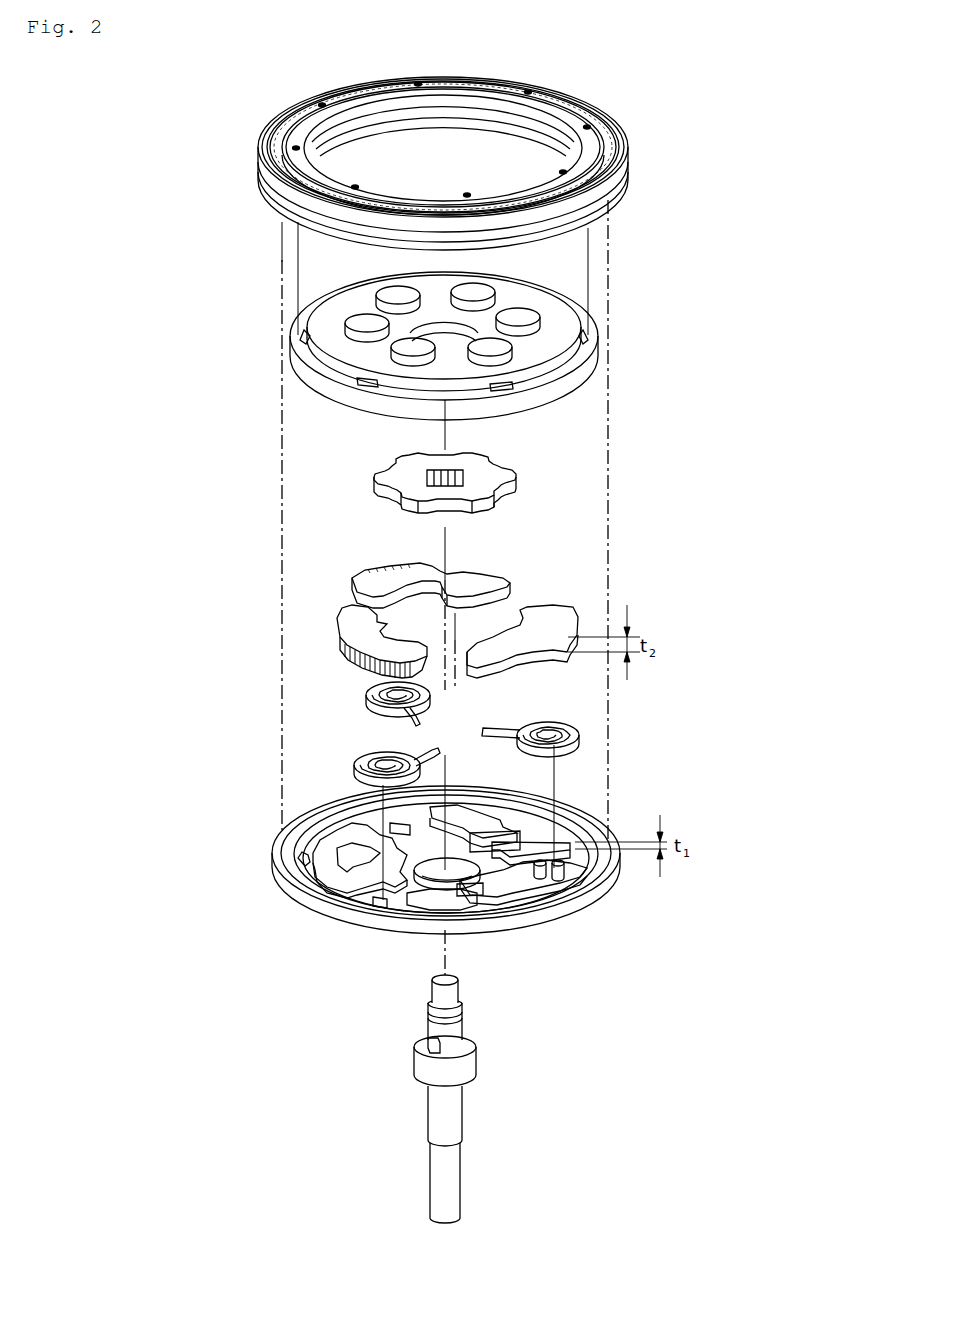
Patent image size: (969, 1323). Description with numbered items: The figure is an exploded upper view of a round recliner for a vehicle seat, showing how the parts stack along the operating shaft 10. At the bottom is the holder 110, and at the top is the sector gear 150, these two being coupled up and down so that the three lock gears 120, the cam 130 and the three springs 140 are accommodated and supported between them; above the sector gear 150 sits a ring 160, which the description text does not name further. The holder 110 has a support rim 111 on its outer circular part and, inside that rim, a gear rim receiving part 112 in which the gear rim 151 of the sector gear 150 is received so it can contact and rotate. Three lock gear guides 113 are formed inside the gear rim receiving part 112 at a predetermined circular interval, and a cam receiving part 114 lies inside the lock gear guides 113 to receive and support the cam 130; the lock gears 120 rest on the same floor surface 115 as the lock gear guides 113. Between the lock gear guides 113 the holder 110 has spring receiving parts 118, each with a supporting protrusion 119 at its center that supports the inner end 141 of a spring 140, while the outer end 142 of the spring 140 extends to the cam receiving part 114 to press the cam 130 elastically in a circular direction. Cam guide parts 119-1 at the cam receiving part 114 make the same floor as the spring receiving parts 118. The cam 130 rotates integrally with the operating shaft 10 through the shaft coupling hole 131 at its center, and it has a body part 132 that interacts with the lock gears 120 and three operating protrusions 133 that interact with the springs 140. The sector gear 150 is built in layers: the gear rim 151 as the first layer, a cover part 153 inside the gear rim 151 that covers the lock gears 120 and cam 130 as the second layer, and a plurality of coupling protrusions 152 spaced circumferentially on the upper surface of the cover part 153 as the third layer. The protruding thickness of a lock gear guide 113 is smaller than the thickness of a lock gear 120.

The operating shaft 10 is at (383, 1101).
The holder 110 is at (416, 896).
The support rim 111 is at (278, 853).
The gear rim receiving part 112 is at (295, 862).
The lock gear guide 113 is at (332, 875).
The cam receiving part 114 is at (405, 880).
The floor surface 115 is at (348, 878).
The spring receiving part 118 is at (565, 864).
The supporting protrusion 119 is at (578, 874).
The cam guide part 119-1 is at (515, 835).
The lock gear 120 is at (305, 620).
The cam 130 is at (379, 494).
The shaft coupling hole 131 is at (460, 470).
The body part 132 is at (382, 497).
The operating protrusion 133 is at (463, 510).
The spring 140 is at (385, 727).
The inner end 141 is at (438, 750).
The outer end 142 is at (410, 727).
The sector gear 150 is at (387, 337).
The gear rim 151 is at (300, 370).
The coupling protrusion 152 is at (518, 312).
The cover part 153 is at (365, 352).
The ring 160 is at (240, 135).